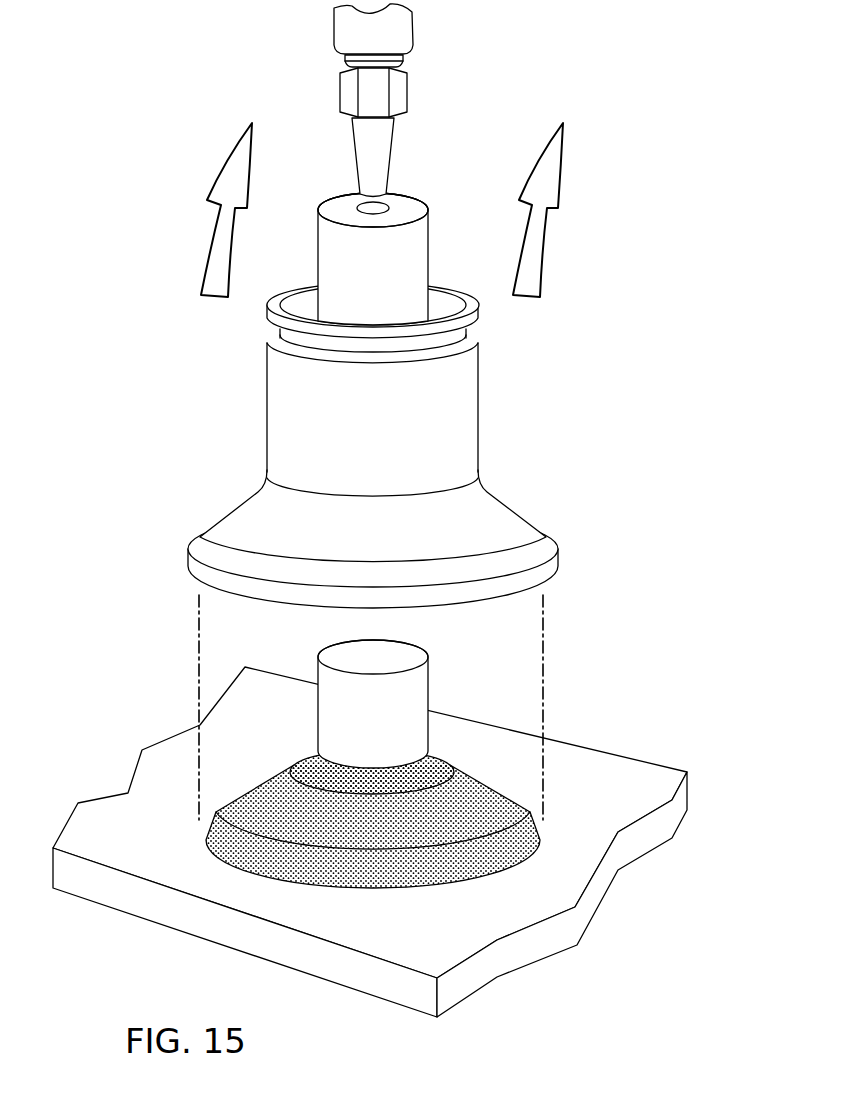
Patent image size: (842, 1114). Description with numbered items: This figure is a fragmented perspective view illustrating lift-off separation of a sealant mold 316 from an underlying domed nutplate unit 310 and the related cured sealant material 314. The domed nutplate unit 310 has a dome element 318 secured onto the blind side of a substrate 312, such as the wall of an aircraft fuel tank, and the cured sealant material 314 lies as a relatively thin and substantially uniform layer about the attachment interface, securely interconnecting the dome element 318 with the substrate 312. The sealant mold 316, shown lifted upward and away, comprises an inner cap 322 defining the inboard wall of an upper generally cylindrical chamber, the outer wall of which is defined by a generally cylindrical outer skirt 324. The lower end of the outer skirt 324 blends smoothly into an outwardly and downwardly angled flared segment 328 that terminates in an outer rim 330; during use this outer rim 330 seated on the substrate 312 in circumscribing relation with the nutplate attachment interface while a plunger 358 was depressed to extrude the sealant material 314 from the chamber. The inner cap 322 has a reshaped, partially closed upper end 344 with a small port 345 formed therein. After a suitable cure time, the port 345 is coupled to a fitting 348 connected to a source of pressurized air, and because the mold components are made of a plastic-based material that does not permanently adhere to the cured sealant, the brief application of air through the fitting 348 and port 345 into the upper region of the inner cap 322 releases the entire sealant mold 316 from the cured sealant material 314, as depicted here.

The domed nutplate unit 310 is at (432, 688).
The substrate 312 is at (517, 955).
The sealant material 314 is at (497, 865).
The sealant mold 316 is at (258, 490).
The dome element 318 is at (325, 713).
The inner cap 322 is at (418, 262).
The outer skirt 324 is at (475, 412).
The flared segment 328 is at (517, 525).
The outer rim 330 is at (552, 575).
The upper end 344 is at (415, 205).
The port 345 is at (362, 203).
The nozzle / fitting tip 348 is at (383, 142).
The plunger 358 is at (478, 320).